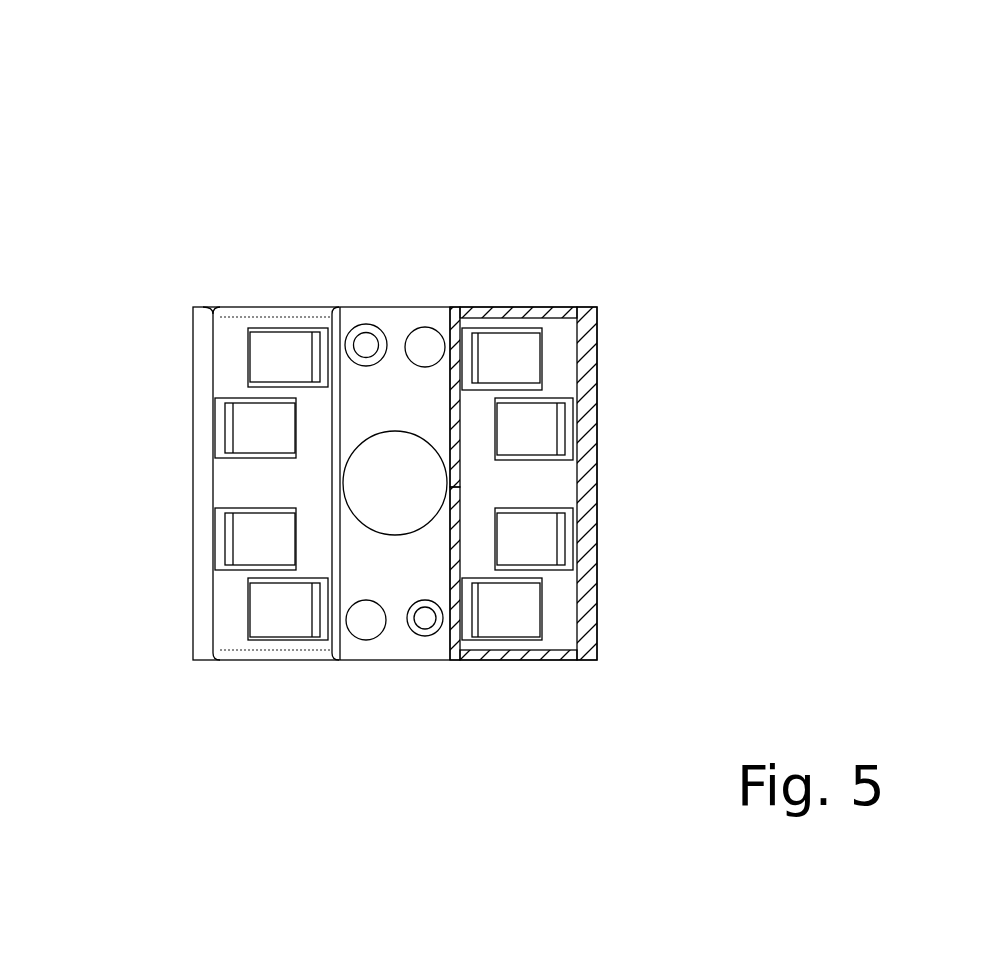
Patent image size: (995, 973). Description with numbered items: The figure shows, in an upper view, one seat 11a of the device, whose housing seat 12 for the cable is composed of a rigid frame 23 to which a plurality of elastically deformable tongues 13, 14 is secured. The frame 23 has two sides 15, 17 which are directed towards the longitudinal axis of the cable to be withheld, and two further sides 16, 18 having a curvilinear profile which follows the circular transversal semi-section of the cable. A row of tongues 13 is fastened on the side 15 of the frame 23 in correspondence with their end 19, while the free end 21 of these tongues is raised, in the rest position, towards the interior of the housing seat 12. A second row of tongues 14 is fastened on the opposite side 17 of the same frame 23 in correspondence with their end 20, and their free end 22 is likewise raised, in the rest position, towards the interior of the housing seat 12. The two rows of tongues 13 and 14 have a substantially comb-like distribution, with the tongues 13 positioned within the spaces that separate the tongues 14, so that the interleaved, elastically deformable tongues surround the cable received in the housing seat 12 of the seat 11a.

The seat 11a is at (612, 120).
The housing seat 12 is at (314, 422).
The tongues 13 is at (242, 428).
The tongues 14 is at (270, 357).
The side 15 is at (455, 413).
The side 16 is at (508, 312).
The side 17 is at (588, 527).
The side 18 is at (510, 657).
The end 19 is at (296, 428).
The end 20 is at (250, 348).
The free end 21 is at (230, 420).
The free end 22 is at (315, 365).
The rigid frame 23 is at (455, 542).